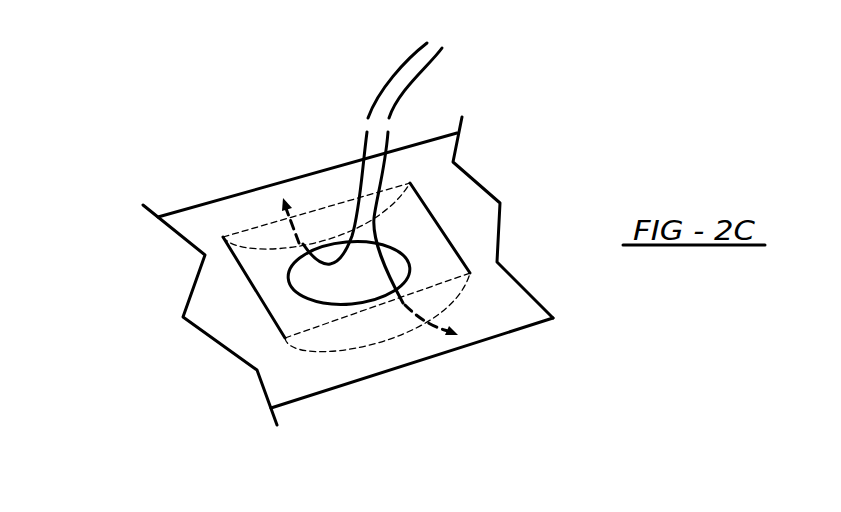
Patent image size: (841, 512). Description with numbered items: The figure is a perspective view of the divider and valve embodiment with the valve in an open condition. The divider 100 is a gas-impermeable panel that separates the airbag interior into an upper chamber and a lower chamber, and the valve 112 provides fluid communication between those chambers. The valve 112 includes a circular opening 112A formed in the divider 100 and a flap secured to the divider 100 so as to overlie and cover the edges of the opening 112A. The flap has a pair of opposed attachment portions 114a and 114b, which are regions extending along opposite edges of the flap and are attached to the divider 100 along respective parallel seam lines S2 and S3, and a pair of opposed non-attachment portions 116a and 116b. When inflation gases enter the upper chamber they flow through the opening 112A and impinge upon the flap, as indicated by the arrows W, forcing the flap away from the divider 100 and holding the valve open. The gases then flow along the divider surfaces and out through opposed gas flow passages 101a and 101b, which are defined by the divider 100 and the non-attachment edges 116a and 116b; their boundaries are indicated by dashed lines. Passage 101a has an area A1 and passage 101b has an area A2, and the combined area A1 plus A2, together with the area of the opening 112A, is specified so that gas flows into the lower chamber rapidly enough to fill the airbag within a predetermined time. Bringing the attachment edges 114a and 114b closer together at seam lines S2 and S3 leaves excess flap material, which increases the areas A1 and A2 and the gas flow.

The divider 100 is at (200, 222).
The valve 112 is at (317, 348).
The circular opening 112A is at (410, 265).
The attachment portion 114a is at (265, 305).
The attachment portion 114b is at (450, 240).
The non-attachment portion 116a is at (270, 250).
The non-attachment portion 116b is at (358, 348).
The gas flow passage 101a is at (330, 220).
The gas flow passage 101b is at (395, 313).
The seam line S2 is at (249, 280).
The seam line S3 is at (440, 223).
The arrows W is at (376, 160).
The area A1 is at (310, 220).
The area A2 is at (372, 318).